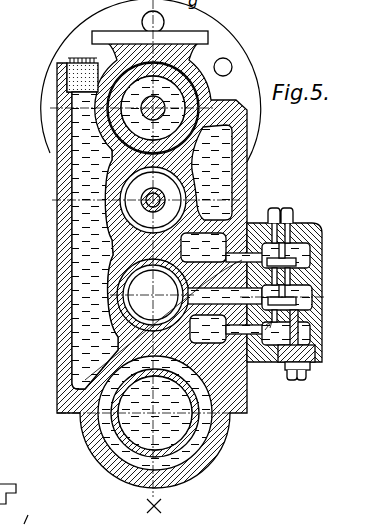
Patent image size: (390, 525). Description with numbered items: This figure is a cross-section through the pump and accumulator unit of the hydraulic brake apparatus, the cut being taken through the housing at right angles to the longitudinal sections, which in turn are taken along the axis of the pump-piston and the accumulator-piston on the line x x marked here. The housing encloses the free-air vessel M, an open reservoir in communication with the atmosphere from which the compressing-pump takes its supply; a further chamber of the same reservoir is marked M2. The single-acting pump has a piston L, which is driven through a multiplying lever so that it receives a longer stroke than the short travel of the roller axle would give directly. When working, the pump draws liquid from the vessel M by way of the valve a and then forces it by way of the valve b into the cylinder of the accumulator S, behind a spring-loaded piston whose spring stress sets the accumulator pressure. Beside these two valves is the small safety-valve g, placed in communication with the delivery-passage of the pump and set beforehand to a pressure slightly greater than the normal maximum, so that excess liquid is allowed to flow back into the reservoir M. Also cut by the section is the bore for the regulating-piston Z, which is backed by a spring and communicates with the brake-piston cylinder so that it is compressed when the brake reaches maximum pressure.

The free-air vessel M is at (95, 240).
The regulating-piston Z is at (153, 200).
The accumulator S is at (162, 351).
The pump-piston L is at (153, 295).
The oil chamber M2 is at (226, 329).
The valve b is at (299, 255).
The valve a is at (299, 297).
The safety-valve g is at (299, 335).
The section line x is at (154, 506).